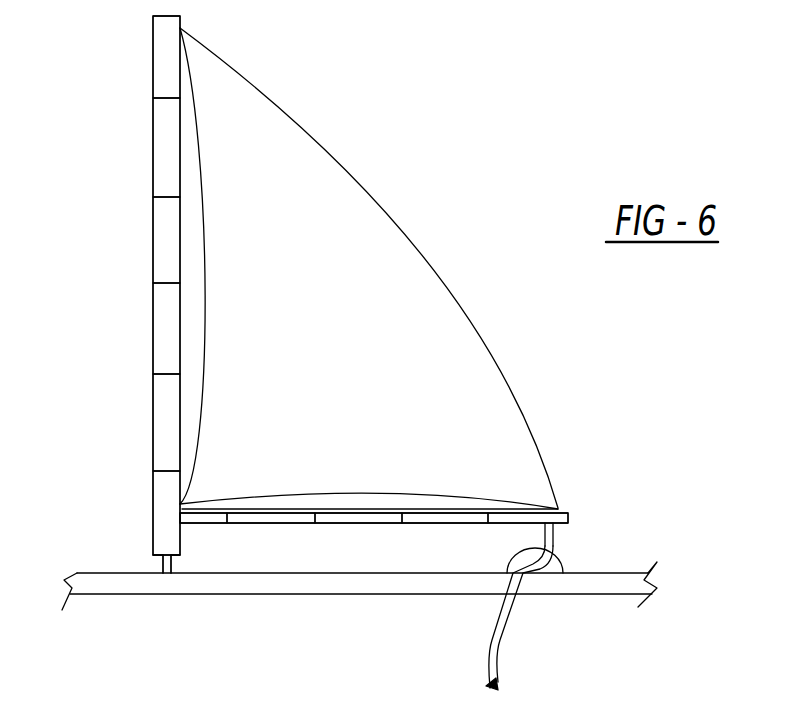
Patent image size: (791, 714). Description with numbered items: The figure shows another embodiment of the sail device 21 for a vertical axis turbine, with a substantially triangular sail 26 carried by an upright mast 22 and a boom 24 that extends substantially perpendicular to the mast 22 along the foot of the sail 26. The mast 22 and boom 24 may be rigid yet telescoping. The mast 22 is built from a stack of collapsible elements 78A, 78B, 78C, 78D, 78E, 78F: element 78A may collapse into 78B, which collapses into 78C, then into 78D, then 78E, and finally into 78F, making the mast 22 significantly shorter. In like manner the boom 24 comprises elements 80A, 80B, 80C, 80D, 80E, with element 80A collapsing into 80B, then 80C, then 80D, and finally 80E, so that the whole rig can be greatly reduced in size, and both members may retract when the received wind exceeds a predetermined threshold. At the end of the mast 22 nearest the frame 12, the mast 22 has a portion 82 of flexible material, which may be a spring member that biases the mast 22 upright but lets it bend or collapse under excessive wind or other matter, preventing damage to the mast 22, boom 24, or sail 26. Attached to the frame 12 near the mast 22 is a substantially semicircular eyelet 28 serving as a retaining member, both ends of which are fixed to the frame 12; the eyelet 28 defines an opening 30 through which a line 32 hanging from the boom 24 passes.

The frame 12 is at (107, 587).
The device 21 is at (415, 104).
The mast 22 is at (150, 68).
The boom 24 is at (573, 517).
The sail 26 is at (352, 278).
The eyelet 28 is at (563, 562).
The opening 30 is at (545, 567).
The mainsheet line 32 is at (493, 655).
The mast element 78A is at (165, 52).
The mast element 78B is at (163, 143).
The mast element 78C is at (164, 233).
The mast element 78D is at (165, 323).
The mast element 78E is at (165, 412).
The mast element 78F is at (167, 510).
The boom element 80A is at (500, 517).
The boom element 80B is at (428, 517).
The boom element 80C is at (357, 517).
The boom element 80D is at (273, 517).
The boom element 80E is at (208, 517).
The flexible portion 82 is at (158, 565).